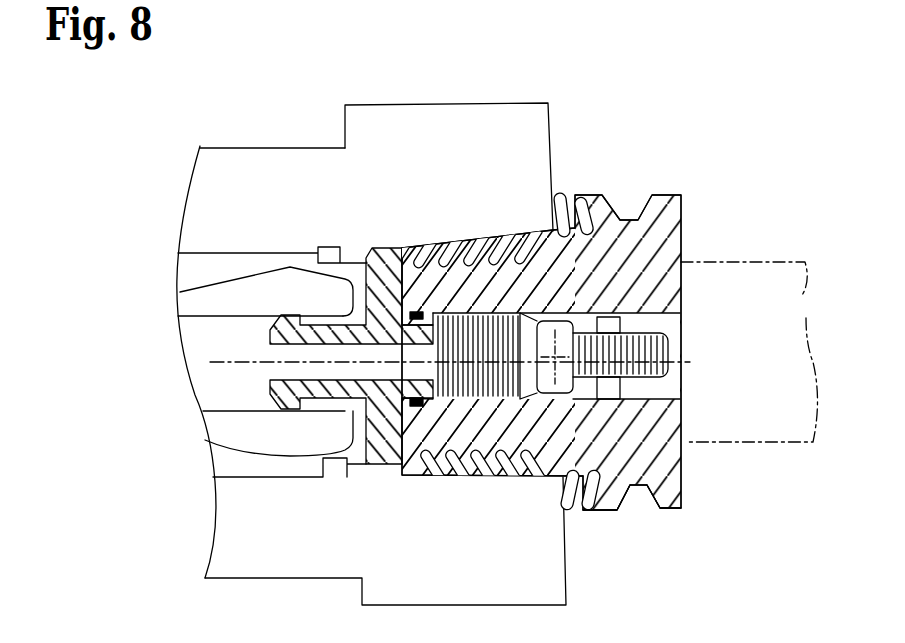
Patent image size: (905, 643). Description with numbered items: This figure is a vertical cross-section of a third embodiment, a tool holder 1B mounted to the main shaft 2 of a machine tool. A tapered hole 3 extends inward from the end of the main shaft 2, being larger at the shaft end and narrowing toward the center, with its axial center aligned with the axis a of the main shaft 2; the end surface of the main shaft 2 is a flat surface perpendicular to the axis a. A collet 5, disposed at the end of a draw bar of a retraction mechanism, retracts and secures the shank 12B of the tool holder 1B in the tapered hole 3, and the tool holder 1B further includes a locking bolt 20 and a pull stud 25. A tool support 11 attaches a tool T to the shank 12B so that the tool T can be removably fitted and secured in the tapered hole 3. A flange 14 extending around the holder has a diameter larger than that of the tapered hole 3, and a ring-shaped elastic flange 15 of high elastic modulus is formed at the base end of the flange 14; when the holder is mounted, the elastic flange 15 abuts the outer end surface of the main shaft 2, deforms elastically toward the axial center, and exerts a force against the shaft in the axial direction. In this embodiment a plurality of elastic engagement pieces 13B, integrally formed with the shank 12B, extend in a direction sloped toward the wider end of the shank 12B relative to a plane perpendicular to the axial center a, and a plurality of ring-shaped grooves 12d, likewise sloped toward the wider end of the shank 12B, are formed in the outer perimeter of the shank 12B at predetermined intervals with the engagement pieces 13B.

The tool holder 1B is at (700, 157).
The main shaft 2 is at (268, 148).
The tapered hole 3 is at (413, 477).
The collet 5 is at (260, 456).
The pull stud 25 is at (334, 412).
The tool support 11 is at (675, 432).
The shank 12B is at (518, 477).
The ring-shaped grooves 12d is at (446, 478).
The elastic engagement pieces 13B is at (428, 244).
The flange 14 is at (668, 510).
The elastic flange 15 is at (563, 197).
The locking bolt 20 is at (670, 350).
The axis a is at (260, 363).
The tool T is at (795, 337).